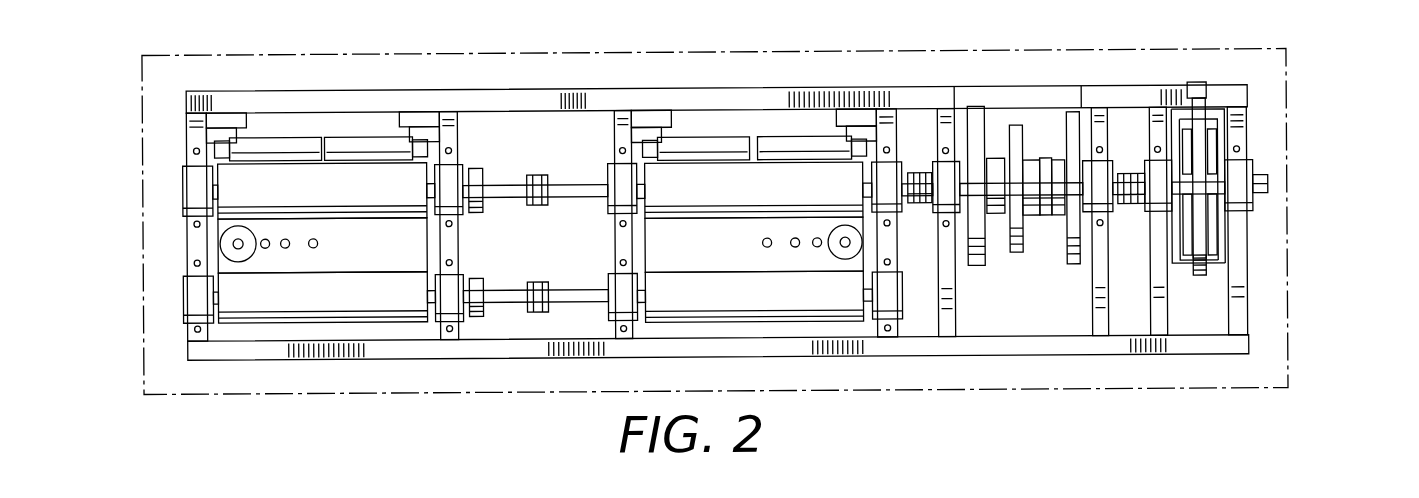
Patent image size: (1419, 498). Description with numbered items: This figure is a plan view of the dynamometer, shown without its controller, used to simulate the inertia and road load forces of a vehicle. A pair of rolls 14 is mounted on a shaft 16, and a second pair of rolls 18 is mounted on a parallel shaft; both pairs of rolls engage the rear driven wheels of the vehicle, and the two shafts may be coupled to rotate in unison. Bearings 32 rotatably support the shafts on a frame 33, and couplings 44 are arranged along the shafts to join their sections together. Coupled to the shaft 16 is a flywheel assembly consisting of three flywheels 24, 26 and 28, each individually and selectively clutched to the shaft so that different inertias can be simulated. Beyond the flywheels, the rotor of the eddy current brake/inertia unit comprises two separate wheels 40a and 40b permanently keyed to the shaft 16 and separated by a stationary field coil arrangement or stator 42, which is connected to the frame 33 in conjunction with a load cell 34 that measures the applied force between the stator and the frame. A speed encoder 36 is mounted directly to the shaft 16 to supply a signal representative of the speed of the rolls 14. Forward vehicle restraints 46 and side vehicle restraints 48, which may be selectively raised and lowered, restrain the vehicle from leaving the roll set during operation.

The rolls 14 is at (542, 190).
The shaft 16 is at (510, 183).
The rolls 18 is at (542, 297).
The flywheel 24 is at (977, 267).
The flywheel 26 is at (1016, 254).
The flywheel 28 is at (1073, 266).
The bearings 32 is at (183, 178).
The frame 33 is at (630, 88).
The load cell 34 is at (1198, 85).
The speed encoder 36 is at (1268, 188).
The rotor wheel 40a is at (1178, 268).
The rotor wheel 40b is at (1222, 269).
The stator 42 is at (1200, 280).
The couplings 44 is at (540, 173).
The forward vehicle restraints 46 is at (352, 140).
The side vehicle restraints 48 is at (238, 252).